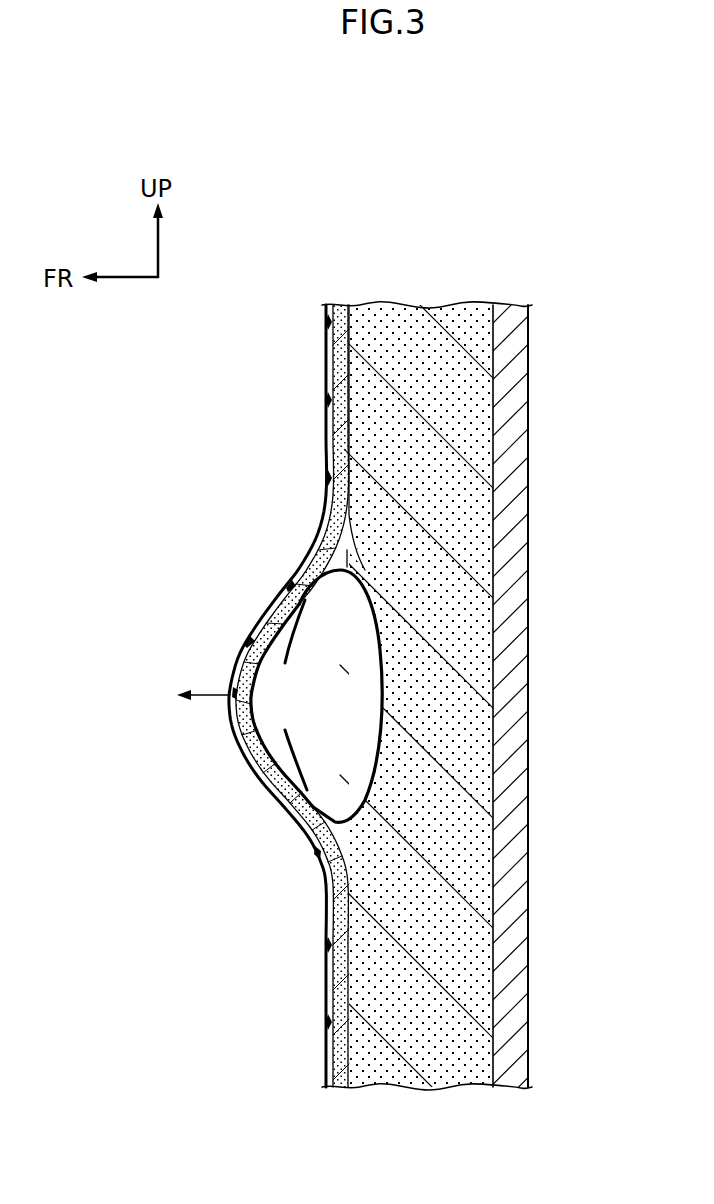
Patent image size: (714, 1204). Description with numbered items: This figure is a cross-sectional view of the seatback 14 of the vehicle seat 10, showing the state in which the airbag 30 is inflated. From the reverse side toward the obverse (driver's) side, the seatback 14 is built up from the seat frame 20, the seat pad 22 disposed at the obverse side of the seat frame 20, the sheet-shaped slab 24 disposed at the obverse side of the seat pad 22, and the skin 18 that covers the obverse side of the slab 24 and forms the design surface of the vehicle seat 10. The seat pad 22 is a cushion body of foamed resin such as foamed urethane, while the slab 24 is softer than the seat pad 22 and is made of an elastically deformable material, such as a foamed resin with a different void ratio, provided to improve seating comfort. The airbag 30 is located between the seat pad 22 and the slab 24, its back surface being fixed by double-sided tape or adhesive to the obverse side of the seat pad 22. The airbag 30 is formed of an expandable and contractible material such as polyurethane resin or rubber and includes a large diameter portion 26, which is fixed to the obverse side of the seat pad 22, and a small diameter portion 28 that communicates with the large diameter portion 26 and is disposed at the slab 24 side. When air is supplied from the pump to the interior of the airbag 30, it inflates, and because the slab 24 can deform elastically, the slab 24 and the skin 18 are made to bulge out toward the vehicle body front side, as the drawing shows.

The vehicle seat 10 is at (526, 259).
The seatback 14 is at (540, 322).
The skin 18 is at (326, 928).
The seat frame 20 is at (520, 615).
The seat pad 22 is at (487, 748).
The slab 24 is at (327, 418).
The large diameter portion 26 is at (338, 658).
The small diameter portion 28 is at (265, 712).
The airbag 30 is at (341, 561).